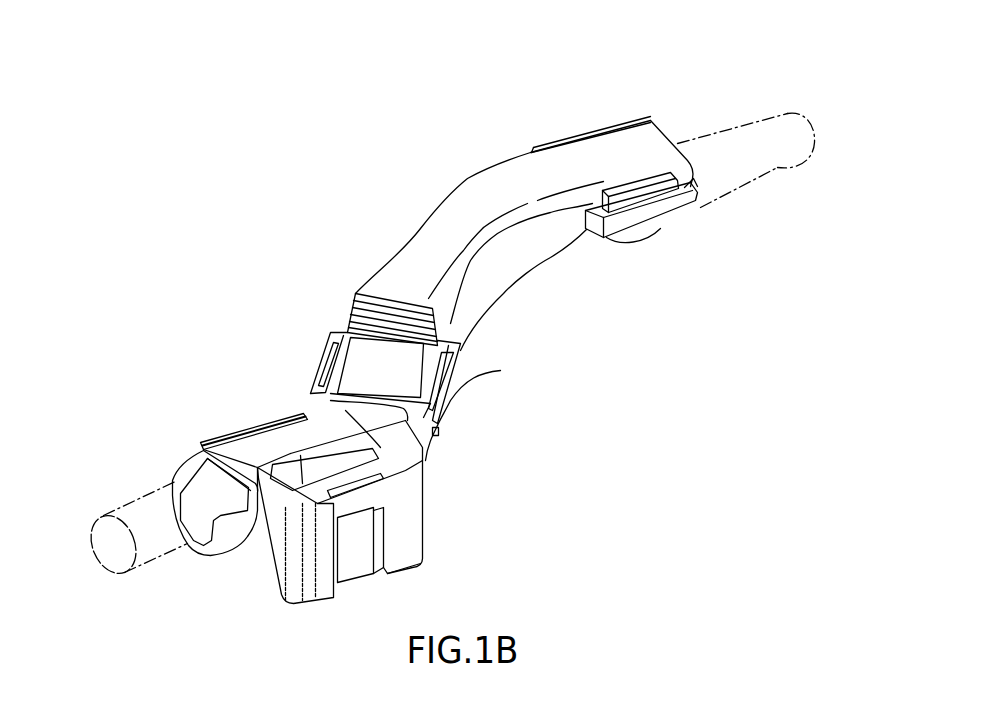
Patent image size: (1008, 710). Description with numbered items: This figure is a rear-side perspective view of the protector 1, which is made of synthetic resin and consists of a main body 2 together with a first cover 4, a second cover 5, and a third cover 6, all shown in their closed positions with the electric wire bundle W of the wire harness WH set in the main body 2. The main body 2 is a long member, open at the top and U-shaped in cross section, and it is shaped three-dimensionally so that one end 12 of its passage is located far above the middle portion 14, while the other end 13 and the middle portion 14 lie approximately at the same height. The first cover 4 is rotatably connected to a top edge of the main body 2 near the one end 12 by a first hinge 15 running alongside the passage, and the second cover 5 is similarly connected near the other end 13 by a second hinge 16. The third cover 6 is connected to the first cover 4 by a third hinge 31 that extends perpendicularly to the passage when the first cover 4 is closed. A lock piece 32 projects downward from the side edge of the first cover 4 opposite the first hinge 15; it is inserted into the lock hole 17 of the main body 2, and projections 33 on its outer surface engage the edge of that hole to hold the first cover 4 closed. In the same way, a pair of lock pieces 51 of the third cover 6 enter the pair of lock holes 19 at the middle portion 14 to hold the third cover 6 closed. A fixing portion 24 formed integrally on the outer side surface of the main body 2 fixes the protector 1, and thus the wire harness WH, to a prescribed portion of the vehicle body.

The protector 1 is at (613, 478).
The main body 2 is at (508, 293).
The first cover 4 is at (505, 185).
The second cover 5 is at (212, 452).
The third cover 6 is at (401, 360).
The one end of the passage 12 is at (694, 203).
The other end of the passage 13 is at (207, 557).
The middle portion 14 is at (432, 447).
The first hinge 15 is at (547, 148).
The second hinge 16 is at (233, 455).
The lock hole 17 is at (696, 180).
The lock holes 19 is at (325, 335).
The fixing portion 24 is at (427, 552).
The third hinge 31 is at (377, 317).
The lock piece 32 is at (621, 240).
The projections 33 is at (648, 235).
The lock pieces 51 is at (330, 360).
The electric wire bundle W is at (119, 502).
The wire harness WH is at (376, 166).